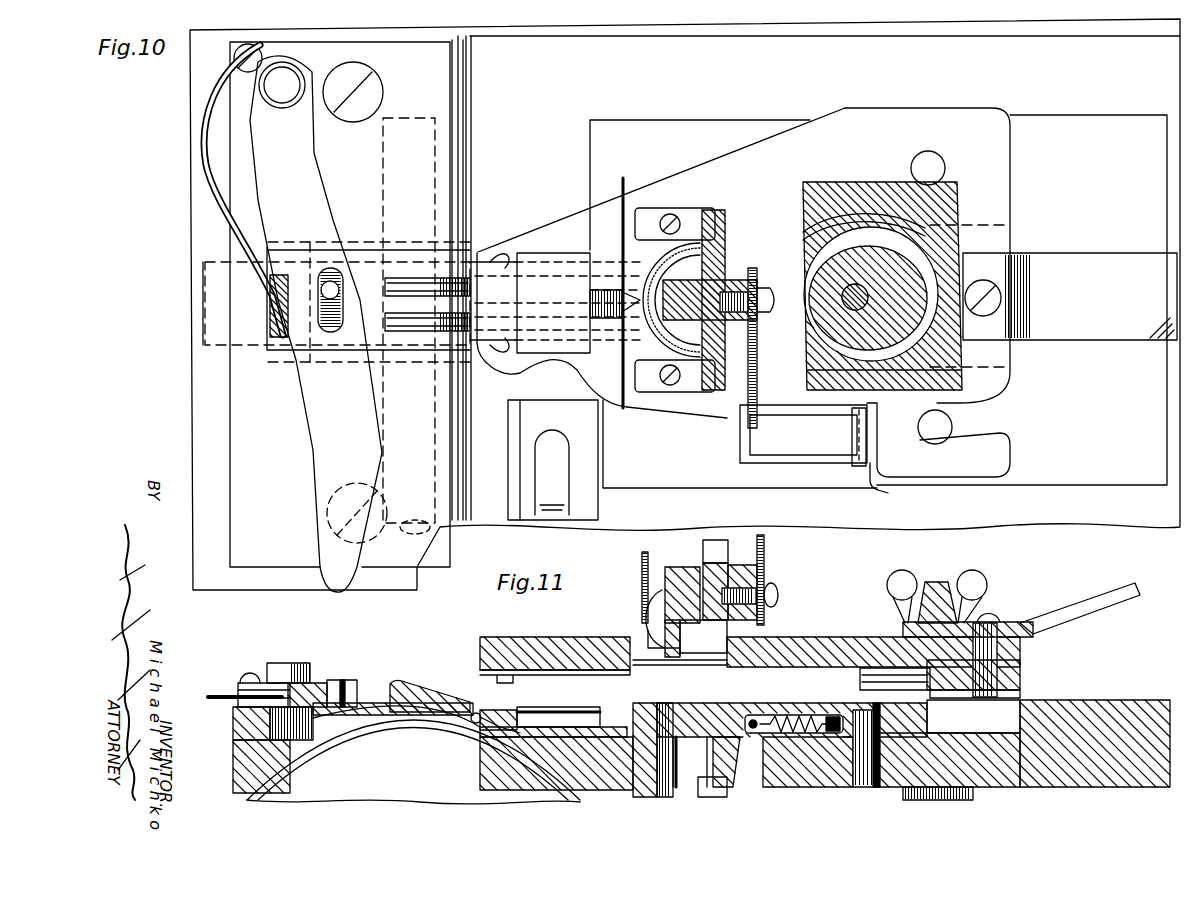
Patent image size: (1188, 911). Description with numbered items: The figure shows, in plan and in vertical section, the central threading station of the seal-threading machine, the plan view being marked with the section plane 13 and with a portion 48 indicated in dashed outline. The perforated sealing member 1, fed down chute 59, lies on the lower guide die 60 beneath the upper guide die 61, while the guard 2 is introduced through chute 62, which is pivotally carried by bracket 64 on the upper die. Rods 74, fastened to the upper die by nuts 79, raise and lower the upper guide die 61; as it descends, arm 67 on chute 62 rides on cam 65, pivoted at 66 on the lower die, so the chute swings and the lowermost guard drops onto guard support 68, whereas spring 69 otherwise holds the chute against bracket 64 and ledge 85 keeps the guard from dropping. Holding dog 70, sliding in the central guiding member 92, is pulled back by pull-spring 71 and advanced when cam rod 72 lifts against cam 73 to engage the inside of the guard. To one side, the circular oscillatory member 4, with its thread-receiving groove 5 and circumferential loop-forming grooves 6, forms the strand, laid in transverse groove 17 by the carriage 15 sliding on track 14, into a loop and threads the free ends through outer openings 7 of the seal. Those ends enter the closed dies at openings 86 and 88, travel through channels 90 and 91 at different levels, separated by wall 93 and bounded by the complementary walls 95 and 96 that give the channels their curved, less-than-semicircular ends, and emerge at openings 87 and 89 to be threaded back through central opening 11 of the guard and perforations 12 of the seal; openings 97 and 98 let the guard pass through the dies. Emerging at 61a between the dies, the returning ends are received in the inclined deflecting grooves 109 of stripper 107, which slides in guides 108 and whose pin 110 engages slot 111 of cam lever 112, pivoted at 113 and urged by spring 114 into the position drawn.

In FIG. 10, the perforated member 1 is at (540, 262).
In FIG. 11, the perforated member 1 is at (565, 708).
In FIG. 11, the gripping and severing member or guard 2 is at (648, 638).
In FIG. 10, the circular and oscillatory member 4 is at (204, 332).
In FIG. 11, the circular and oscillatory member 4 is at (406, 755).
In FIG. 11, the thread-receiving groove 5 is at (470, 736).
In FIG. 10, the circumferential loop-forming grooves 6 is at (205, 263).
In FIG. 11, the circumferential loop-forming grooves 6 is at (364, 722).
In FIG. 10, the outer openings 7 is at (520, 262).
In FIG. 10, the central opening 11 is at (182, 305).
In FIG. 11, the central opening 11 is at (650, 620).
In FIG. 10, the perforations 12 is at (125, 305).
In FIG. 10, the section line 13 is at (860, 102).
In FIG. 10, the track 14 is at (537, 202).
In FIG. 10, the carriage 15 is at (440, 190).
In FIG. 10, the transverse groove 17 is at (452, 150).
In FIG. 10, the slot 48 is at (402, 118).
In FIG. 10, the chute 59 is at (584, 468).
In FIG. 10, the lower guide die 60 is at (598, 426).
In FIG. 11, the lower guide die 60 is at (1160, 692).
In FIG. 10, the upper guide die 61 is at (776, 158).
In FIG. 11, the upper guide die 61 is at (800, 640).
In FIG. 11, the point between the upper and lower guide dies 61a is at (494, 712).
In FIG. 10, the chute 62 is at (690, 240).
In FIG. 11, the chute 62 is at (642, 560).
In FIG. 10, the bracket 64 is at (726, 218).
In FIG. 11, the bracket 64 is at (703, 542).
In FIG. 10, the cam 65 is at (815, 432).
In FIG. 10, the pivot 66 is at (887, 483).
In FIG. 10, the arm 67 is at (758, 388).
In FIG. 11, the arm 67 is at (766, 557).
In FIG. 11, the guard support 68 is at (656, 712).
In FIG. 10, the spring 69 is at (652, 280).
In FIG. 11, the spring 69 is at (665, 590).
In FIG. 10, the holding dog 70 is at (772, 298).
In FIG. 11, the holding dog 70 is at (730, 722).
In FIG. 11, the pull-spring 71 is at (786, 715).
In FIG. 11, the cam rod 72 is at (712, 787).
In FIG. 11, the cam 73 is at (738, 742).
In FIG. 10, the rods 74 is at (952, 425).
In FIG. 11, the rods 74 is at (1010, 696).
In FIG. 11, the nuts 79 is at (985, 578).
In FIG. 11, the ledge 85 is at (708, 660).
In FIG. 10, the opening 86 is at (675, 387).
In FIG. 10, the opening 87 is at (672, 245).
In FIG. 10, the opening 88 is at (715, 240).
In FIG. 10, the opening 89 is at (648, 345).
In FIG. 10, the channel 90 is at (830, 200).
In FIG. 10, the channel 91 is at (860, 186).
In FIG. 10, the central guiding member 92 is at (945, 235).
In FIG. 11, the central guiding member 92 is at (840, 718).
In FIG. 10, the wall 93 is at (808, 385).
In FIG. 10, the complementary wall 95 is at (917, 372).
In FIG. 11, the complementary wall 95 is at (868, 668).
In FIG. 10, the complementary wall 96 is at (945, 178).
In FIG. 11, the complementary wall 96 is at (962, 620).
In FIG. 11, the opening 97 is at (612, 718).
In FIG. 11, the opening 98 is at (643, 660).
In FIG. 10, the stripper 107 is at (370, 232).
In FIG. 11, the stripper 107 is at (370, 703).
In FIG. 10, the guides 108 is at (405, 242).
In FIG. 10, the inclined deflecting grooves 109 is at (392, 318).
In FIG. 11, the inclined deflecting grooves 109 is at (410, 688).
In FIG. 10, the pin 110 is at (335, 335).
In FIG. 11, the pin 110 is at (342, 682).
In FIG. 10, the slot 111 is at (327, 320).
In FIG. 10, the cam lever 112 is at (298, 168).
In FIG. 11, the cam lever 112 is at (316, 685).
In FIG. 10, the pivot 113 is at (290, 64).
In FIG. 11, the pivot 113 is at (278, 680).
In FIG. 10, the spring 114 is at (204, 134).
In FIG. 11, the spring 114 is at (216, 694).